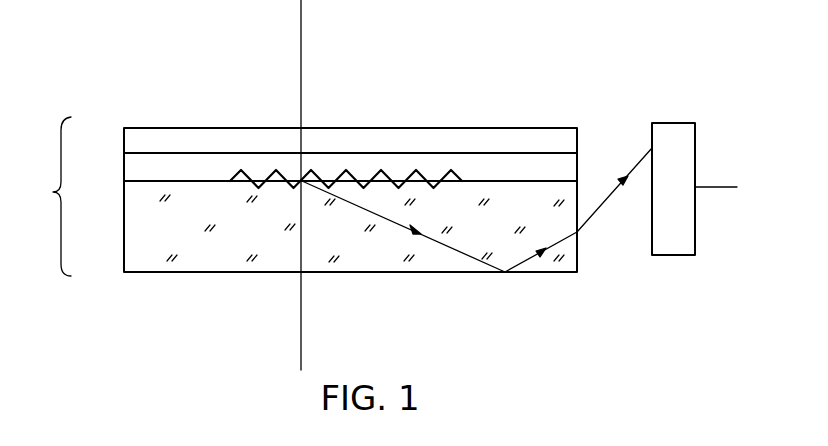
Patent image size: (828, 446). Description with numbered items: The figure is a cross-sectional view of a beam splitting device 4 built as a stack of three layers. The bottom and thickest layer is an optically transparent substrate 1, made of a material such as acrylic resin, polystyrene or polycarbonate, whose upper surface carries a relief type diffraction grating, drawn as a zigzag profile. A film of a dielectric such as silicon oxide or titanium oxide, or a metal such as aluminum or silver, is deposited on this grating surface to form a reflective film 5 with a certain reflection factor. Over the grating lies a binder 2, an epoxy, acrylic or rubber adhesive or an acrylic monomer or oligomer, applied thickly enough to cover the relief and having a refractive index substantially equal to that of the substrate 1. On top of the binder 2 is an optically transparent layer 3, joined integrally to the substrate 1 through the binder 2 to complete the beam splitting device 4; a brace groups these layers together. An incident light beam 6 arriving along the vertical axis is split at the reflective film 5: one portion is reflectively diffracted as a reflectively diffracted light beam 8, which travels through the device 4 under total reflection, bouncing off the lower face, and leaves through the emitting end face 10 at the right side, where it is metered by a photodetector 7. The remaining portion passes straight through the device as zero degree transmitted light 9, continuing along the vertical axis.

The optically transparent substrate 1 is at (124, 245).
The binder 2 is at (124, 173).
The optically transparent layer 3 is at (124, 145).
The beam splitting device 4 is at (52, 196).
The reflective film 5 is at (455, 166).
The incident light beam 6 is at (303, 319).
The photodetector 7 is at (672, 122).
The reflectively diffracted light beam 8 is at (595, 211).
The zero degree transmitted light 9 is at (302, 43).
The emitting end face 10 is at (577, 151).